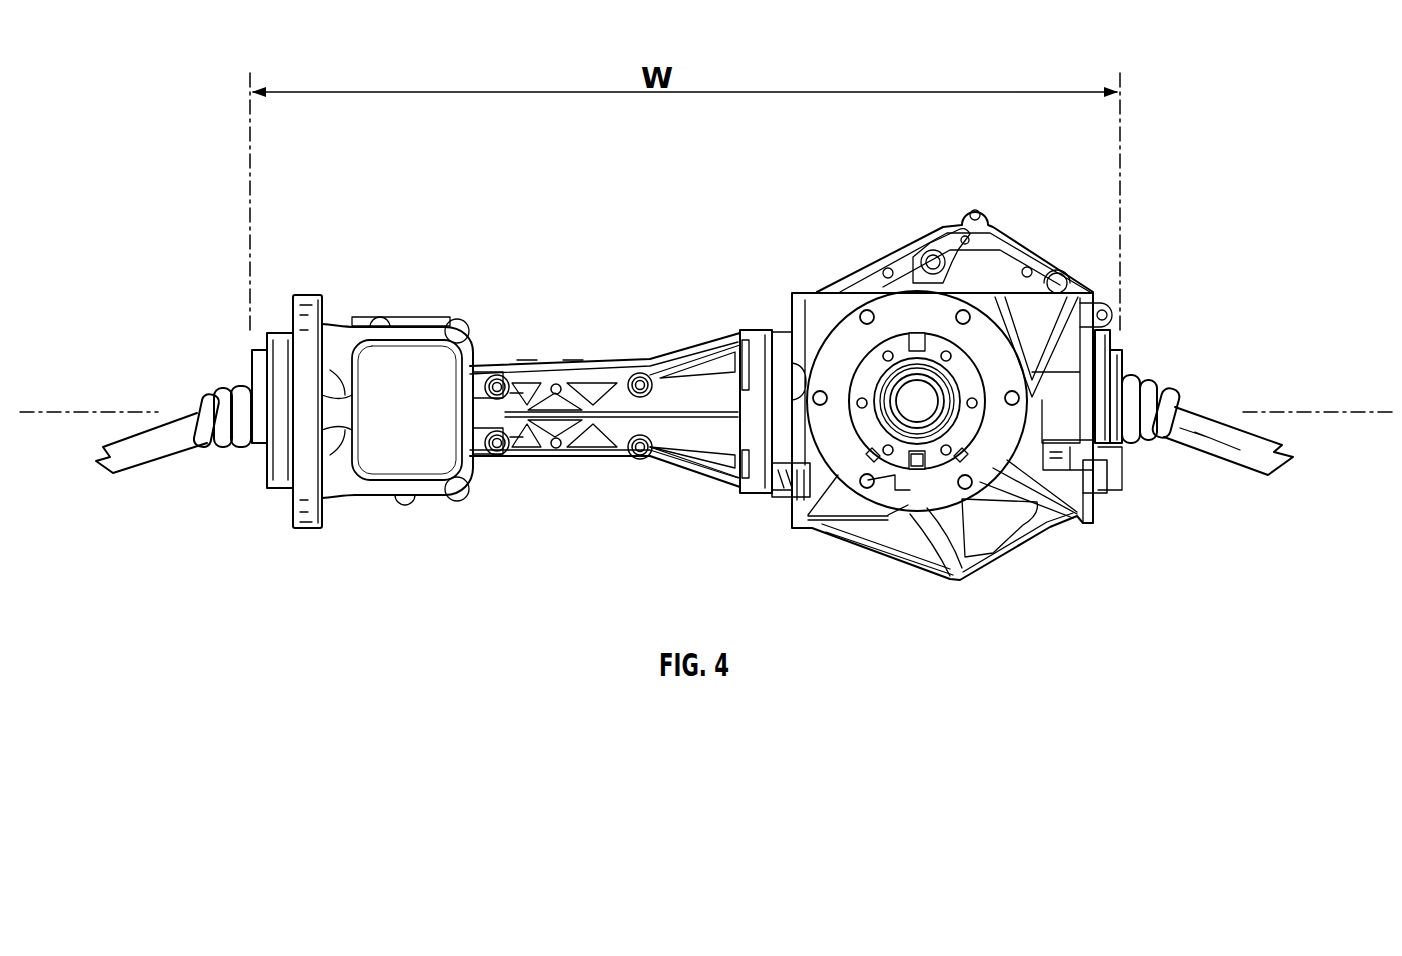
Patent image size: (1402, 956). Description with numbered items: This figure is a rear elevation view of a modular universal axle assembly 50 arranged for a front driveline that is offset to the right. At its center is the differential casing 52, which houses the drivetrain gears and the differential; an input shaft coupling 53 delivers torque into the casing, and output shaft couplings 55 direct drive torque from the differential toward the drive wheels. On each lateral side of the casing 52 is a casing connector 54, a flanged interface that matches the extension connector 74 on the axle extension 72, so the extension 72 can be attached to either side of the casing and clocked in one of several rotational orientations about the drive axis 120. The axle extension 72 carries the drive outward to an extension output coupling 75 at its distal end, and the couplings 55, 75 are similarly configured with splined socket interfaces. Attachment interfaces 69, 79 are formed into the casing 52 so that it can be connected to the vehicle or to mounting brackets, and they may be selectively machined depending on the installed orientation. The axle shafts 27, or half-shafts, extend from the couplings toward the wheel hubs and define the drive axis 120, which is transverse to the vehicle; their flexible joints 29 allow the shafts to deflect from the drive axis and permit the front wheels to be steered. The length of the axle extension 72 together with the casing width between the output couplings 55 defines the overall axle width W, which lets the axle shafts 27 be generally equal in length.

The drive axis 120 is at (108, 400).
The axle shafts 27 is at (148, 457).
The flexible joints 29 is at (231, 463).
The extension output coupling 75 is at (256, 358).
The axle extension 72 is at (600, 340).
The extension connector 74 is at (745, 325).
The casing connector 54 is at (773, 503).
The output shaft couplings 55 is at (1128, 370).
The casing 52 is at (911, 233).
The attachment interface 79 is at (974, 208).
The attachment interface 69 is at (966, 312).
The input shaft coupling 53 is at (933, 462).
The modular universal axle assembly 50 is at (658, 545).